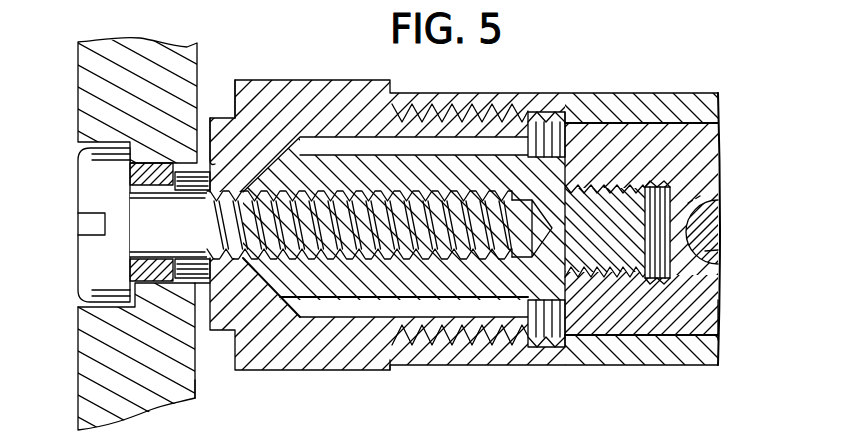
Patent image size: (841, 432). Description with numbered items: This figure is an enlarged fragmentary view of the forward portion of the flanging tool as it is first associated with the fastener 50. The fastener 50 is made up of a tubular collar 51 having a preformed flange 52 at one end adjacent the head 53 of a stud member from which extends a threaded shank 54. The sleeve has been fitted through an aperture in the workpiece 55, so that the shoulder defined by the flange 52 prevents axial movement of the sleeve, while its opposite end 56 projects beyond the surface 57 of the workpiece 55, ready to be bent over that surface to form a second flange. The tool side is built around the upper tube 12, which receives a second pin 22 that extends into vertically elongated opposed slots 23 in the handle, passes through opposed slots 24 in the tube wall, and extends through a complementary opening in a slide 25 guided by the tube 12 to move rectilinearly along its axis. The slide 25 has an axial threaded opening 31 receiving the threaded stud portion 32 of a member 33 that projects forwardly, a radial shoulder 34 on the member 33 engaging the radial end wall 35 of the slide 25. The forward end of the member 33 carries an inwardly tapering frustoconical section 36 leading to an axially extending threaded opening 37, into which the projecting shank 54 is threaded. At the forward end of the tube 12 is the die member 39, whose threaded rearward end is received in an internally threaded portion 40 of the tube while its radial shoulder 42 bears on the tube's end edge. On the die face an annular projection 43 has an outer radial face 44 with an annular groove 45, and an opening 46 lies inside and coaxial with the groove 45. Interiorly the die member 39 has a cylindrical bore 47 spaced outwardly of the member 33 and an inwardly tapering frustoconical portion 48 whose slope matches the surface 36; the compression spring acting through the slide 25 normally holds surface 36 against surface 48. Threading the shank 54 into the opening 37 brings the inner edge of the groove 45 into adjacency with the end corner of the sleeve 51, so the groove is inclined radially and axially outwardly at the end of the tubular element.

The upper tube 12 is at (657, 365).
The second pin 22 is at (710, 232).
The opposed slots in the handle 23 is at (704, 194).
The opposed slots in the tube wall 24 is at (722, 250).
The slide 25 is at (710, 318).
The axial threaded opening 31 is at (668, 268).
The threaded stud portion 32 is at (612, 188).
The member 33 is at (540, 347).
The radial shoulder 34 is at (566, 272).
The radial end wall 35 is at (566, 122).
The frustoconical section 36 is at (252, 302).
The threaded opening 37 is at (414, 261).
The die member 39 is at (383, 53).
The internally threaded portion 40 is at (455, 366).
The radial shoulder of the die member 42 is at (390, 363).
The annular projection 43 is at (231, 118).
The outer radial face 44 is at (207, 125).
The annular groove 45 is at (213, 157).
The opening 46 is at (214, 190).
The cylindrical bore 47 is at (466, 132).
The frustoconical portion 48 is at (307, 317).
The fastener 50 is at (282, 225).
The tubular collar 51 is at (143, 298).
The preformed flange 52 is at (136, 153).
The head 53 is at (90, 190).
The threaded shank 54 is at (320, 252).
The workpiece 55 is at (157, 400).
The opposite end of the sleeve 56 is at (208, 298).
The surface of the workpiece 57 is at (196, 400).